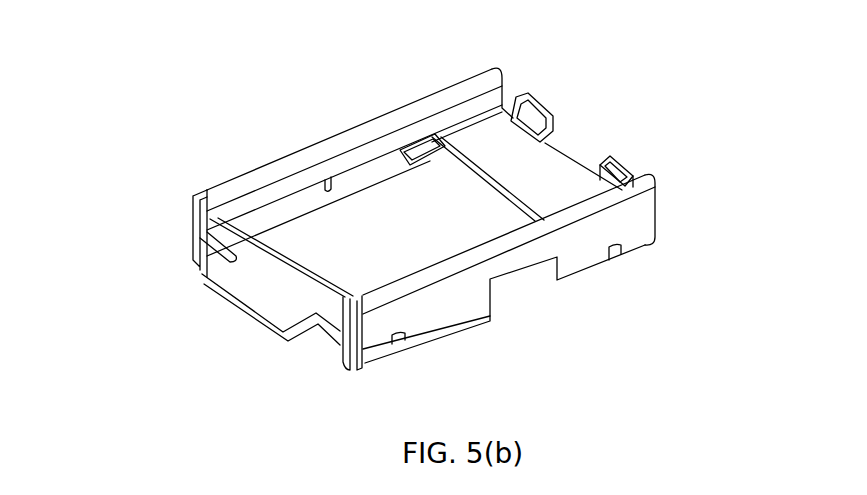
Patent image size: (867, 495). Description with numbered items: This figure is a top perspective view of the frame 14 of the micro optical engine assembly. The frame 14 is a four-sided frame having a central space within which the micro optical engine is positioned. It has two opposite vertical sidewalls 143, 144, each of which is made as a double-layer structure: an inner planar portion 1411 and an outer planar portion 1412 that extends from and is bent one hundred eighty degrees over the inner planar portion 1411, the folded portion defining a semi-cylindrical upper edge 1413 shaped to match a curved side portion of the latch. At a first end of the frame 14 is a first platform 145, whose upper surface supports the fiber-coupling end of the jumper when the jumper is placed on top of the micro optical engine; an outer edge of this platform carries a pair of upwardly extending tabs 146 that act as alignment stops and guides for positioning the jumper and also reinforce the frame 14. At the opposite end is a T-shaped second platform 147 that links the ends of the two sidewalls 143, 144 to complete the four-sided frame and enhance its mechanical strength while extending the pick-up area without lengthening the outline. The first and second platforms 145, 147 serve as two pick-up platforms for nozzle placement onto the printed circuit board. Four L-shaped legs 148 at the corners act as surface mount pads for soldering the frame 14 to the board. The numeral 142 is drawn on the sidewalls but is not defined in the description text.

The frame 14 is at (287, 154).
The side wall 142 is at (347, 172).
The sidewall 143 is at (653, 212).
The sidewall 144 is at (483, 69).
The first platform 145 is at (565, 178).
The tab 146 is at (540, 107).
The second platform 147 is at (268, 278).
The L-shaped leg 148 is at (328, 352).
The inner planar portion 1411 is at (228, 217).
The outer planar portion 1412 is at (192, 218).
The semi-cylindrical upper edge 1413 is at (207, 190).